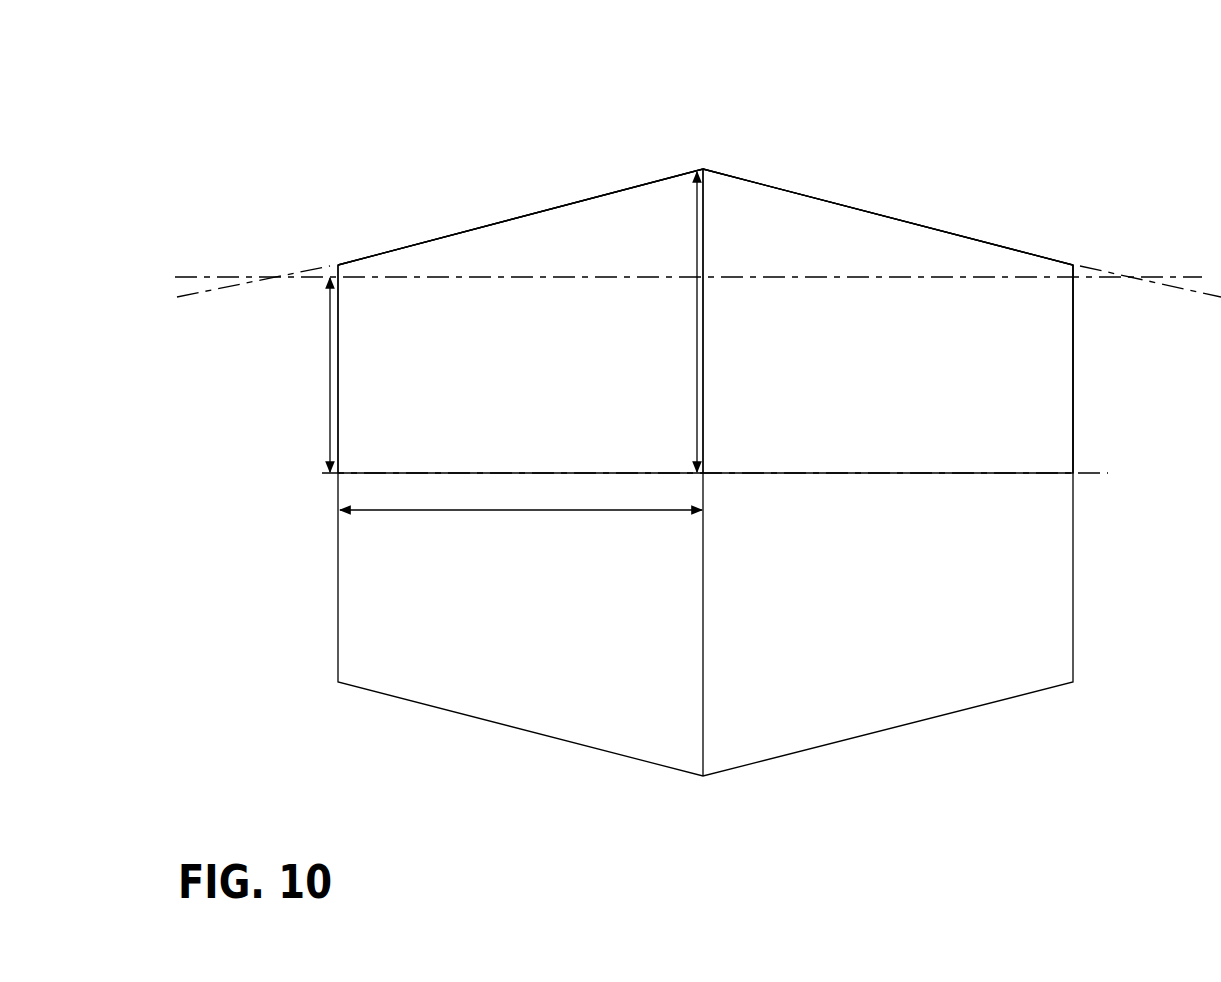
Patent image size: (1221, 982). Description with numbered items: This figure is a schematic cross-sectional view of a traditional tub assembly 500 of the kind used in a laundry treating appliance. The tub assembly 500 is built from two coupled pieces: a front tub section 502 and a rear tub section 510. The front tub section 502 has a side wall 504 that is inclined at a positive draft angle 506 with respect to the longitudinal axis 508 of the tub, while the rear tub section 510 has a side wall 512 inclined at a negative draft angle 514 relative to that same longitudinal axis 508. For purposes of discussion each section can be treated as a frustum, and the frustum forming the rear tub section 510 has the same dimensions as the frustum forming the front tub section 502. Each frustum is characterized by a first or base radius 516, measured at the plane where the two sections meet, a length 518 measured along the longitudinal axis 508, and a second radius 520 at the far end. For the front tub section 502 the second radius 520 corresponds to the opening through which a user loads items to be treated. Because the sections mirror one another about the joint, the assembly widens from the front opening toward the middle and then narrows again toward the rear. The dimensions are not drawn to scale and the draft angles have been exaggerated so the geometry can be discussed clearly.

The traditional tub assembly 500 is at (968, 108).
The front tub section 502 is at (468, 205).
The side wall 504 is at (558, 207).
The positive draft angle 506 is at (326, 280).
The longitudinal axis 508 is at (868, 279).
The rear tub section 510 is at (1002, 217).
The side wall 512 is at (845, 203).
The negative draft angle 514 is at (1084, 280).
The first or base radius 516 is at (695, 330).
The length 518 is at (568, 507).
The second radius 520 is at (329, 390).